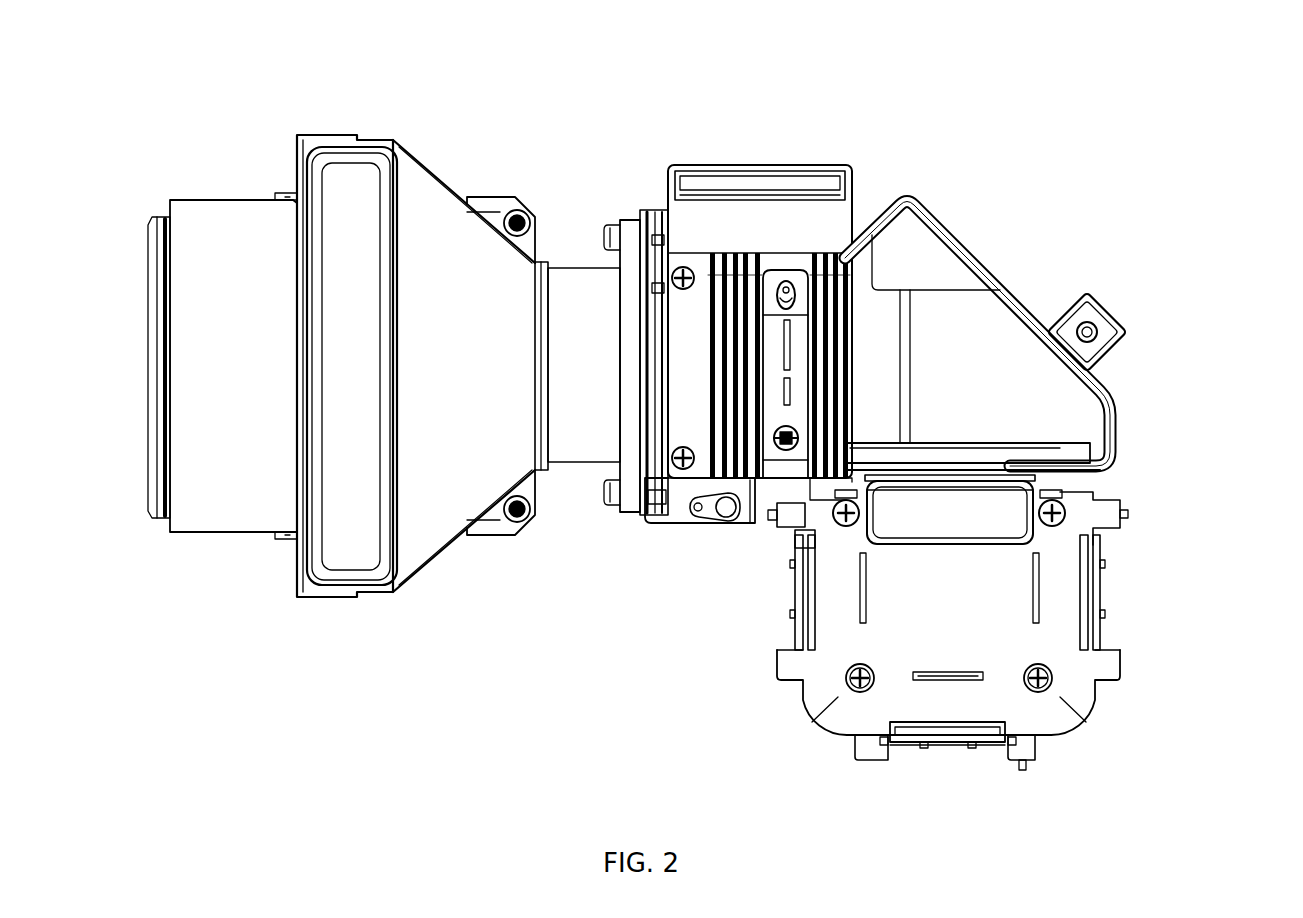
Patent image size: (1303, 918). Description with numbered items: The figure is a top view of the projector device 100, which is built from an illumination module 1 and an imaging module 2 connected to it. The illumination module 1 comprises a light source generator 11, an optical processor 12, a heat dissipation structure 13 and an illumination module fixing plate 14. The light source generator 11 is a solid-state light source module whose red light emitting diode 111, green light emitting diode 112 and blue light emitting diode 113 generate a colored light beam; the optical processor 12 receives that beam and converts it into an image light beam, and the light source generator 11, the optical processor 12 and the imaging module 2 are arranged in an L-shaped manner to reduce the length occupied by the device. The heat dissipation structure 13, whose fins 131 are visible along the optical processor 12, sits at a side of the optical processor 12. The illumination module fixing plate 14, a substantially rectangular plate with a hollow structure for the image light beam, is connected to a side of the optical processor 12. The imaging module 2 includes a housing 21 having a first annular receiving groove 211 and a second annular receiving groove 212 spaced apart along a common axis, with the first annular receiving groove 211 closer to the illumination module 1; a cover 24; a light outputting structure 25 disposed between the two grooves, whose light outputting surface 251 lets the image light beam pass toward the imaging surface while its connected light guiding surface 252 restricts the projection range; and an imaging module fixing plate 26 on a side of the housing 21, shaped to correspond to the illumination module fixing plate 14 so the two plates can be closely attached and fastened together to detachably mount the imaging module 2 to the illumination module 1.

The projector device 100 is at (66, 131).
The illumination module 1 is at (1238, 310).
The light source generator 11 is at (1120, 828).
The red light emitting diode 111 is at (793, 598).
The green light emitting diode 112 is at (945, 737).
The blue light emitting diode 113 is at (1105, 598).
The optical processor 12 is at (990, 318).
The heat dissipation structure 13 is at (812, 92).
The heat dissipation fins 131 is at (830, 240).
The illumination module fixing plate 14 is at (655, 215).
The imaging module 2 is at (1238, 478).
The housing 21 is at (232, 525).
The first annular receiving groove 211 is at (580, 280).
The second annular receiving groove 212 is at (232, 215).
The cover 24 is at (150, 345).
The light outputting structure 25 is at (373, 66).
The light outputting surface 251 is at (372, 180).
The light guiding surface 252 is at (432, 190).
The imaging module fixing plate 26 is at (637, 215).